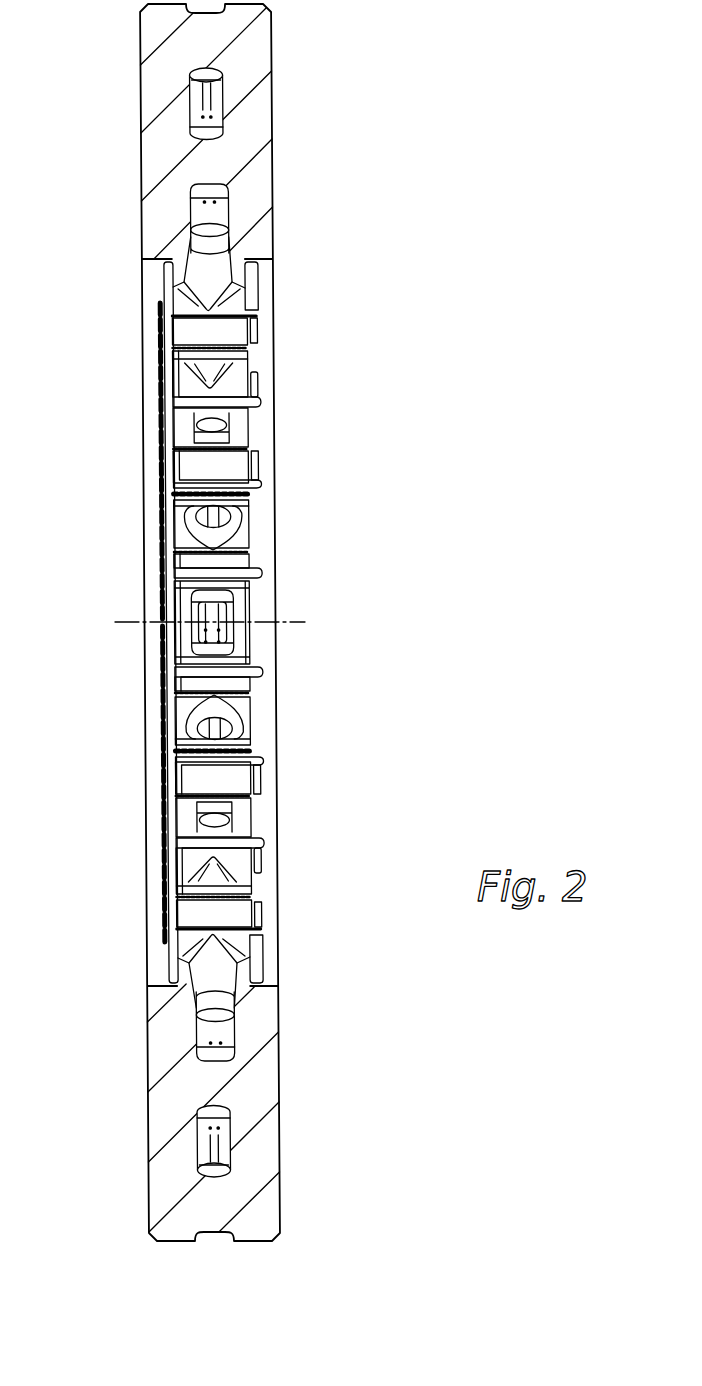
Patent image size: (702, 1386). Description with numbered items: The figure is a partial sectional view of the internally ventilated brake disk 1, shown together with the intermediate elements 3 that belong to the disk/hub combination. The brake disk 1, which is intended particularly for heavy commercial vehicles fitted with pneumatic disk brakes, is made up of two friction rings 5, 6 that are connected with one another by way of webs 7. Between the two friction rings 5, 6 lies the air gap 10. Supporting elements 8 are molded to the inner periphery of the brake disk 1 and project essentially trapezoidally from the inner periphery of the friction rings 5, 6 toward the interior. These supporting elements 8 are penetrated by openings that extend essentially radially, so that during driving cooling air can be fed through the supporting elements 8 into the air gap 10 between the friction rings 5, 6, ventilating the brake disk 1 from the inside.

The brake disk 1 is at (248, 129).
The intermediate elements 3 is at (168, 286).
The friction ring 5 is at (173, 1118).
The friction ring 6 is at (263, 1148).
The webs 7 is at (218, 1093).
The supporting elements 8 is at (247, 267).
The air gap 10 is at (242, 613).